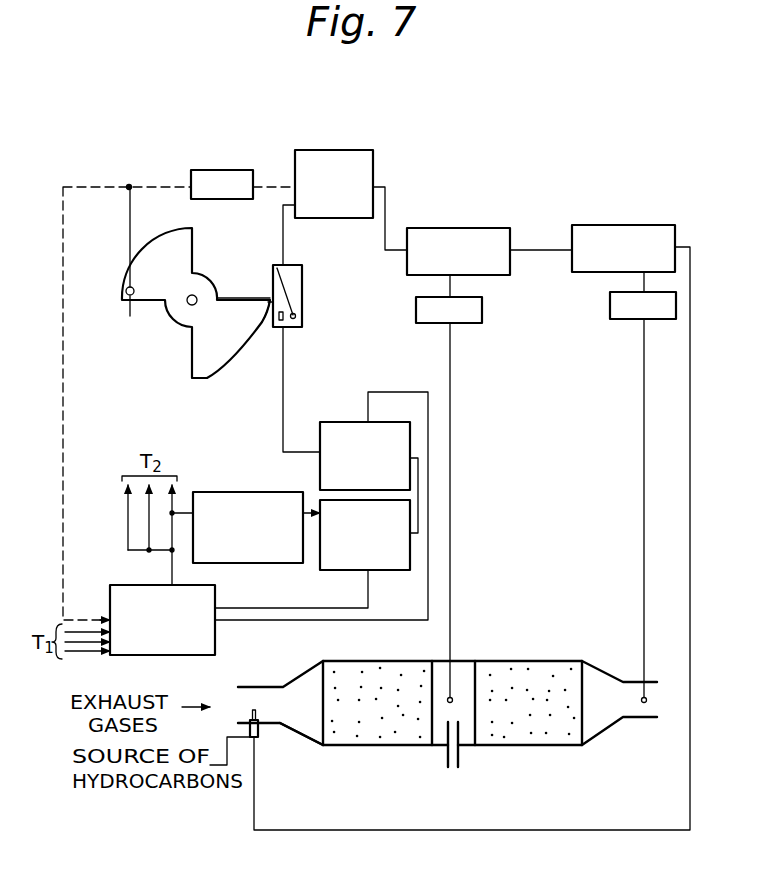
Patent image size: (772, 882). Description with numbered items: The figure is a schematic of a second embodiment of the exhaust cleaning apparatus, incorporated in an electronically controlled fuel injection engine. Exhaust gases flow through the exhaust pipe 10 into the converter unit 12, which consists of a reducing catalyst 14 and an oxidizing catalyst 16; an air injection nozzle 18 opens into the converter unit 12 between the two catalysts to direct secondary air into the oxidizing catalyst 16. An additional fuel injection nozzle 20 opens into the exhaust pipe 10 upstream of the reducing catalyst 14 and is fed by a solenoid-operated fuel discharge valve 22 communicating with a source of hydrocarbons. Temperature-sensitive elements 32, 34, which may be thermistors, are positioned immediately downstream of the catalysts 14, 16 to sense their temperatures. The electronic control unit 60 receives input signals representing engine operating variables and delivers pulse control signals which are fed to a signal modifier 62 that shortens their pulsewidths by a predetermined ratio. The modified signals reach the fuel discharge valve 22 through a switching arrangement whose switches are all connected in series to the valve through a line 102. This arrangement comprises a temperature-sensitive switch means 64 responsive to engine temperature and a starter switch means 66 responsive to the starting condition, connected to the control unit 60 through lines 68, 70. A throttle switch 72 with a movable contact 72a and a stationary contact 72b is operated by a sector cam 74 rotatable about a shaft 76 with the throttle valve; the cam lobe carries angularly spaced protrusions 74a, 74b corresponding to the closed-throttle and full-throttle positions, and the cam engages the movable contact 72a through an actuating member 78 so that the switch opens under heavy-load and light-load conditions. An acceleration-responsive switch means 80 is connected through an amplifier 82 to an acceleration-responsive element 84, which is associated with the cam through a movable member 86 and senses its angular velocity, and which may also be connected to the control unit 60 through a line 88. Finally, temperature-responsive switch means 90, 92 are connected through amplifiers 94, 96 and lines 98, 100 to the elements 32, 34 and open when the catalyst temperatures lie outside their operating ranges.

The exhaust pipe 10 is at (256, 684).
The converter unit 12 is at (532, 655).
The reducing catalyst 14 is at (373, 748).
The oxidizing catalyst 16 is at (523, 745).
The air injection nozzle 18 is at (453, 768).
The additional fuel injection nozzle 20 is at (290, 725).
The fuel discharge valve 22 is at (262, 741).
The temperature-sensitive element 32 is at (455, 697).
The temperature-sensitive element 34 is at (644, 697).
The electronic control unit 60 is at (216, 648).
The signal modifier 62 is at (256, 492).
The temperature-sensitive switch means 64 is at (356, 563).
The starter switch means 66 is at (348, 422).
The line 68 is at (303, 608).
The line 70 is at (399, 622).
The throttle switch 72 is at (302, 268).
The movable contact 72a is at (302, 296).
The stationary contact 72b is at (294, 322).
The sector cam 74 is at (239, 297).
The protrusion 74a is at (263, 326).
The protrusion 74b is at (204, 378).
The shaft 76 is at (190, 305).
The cam follower 78 is at (276, 290).
The acceleration-responsive switch means 80 is at (335, 150).
The amplifier 82 is at (216, 170).
The acceleration-responsive element 84 is at (128, 316).
The movable member 86 is at (163, 233).
The line 88 is at (63, 355).
The temperature-responsive switch means 90 is at (443, 228).
The temperature-responsive switch means 92 is at (632, 225).
The amplifier 94 is at (465, 323).
The amplifier 96 is at (628, 320).
The line 98 is at (450, 445).
The line 100 is at (644, 448).
The line 102 is at (632, 830).